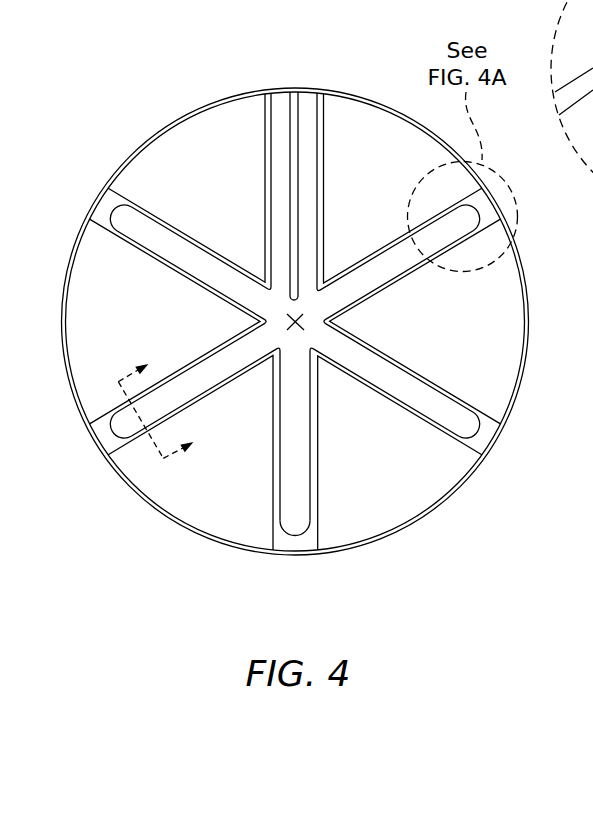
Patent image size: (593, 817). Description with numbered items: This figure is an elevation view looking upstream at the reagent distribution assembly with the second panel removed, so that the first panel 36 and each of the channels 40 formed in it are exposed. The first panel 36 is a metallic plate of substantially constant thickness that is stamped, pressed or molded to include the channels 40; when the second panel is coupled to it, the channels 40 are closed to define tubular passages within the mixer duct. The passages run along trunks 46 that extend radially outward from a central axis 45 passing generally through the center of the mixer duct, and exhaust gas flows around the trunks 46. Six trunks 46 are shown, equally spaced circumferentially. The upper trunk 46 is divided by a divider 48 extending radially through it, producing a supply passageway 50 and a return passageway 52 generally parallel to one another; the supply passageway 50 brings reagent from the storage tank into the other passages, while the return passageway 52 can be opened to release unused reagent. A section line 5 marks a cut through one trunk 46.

The first panel 36 is at (462, 398).
The channels 40 is at (458, 430).
The central axis 45 is at (284, 315).
The trunks 46 is at (250, 176).
The divider 48 is at (316, 157).
The supply passageway 50 is at (282, 104).
The return passageway 52 is at (308, 104).
The section line 5- 5 is at (166, 404).